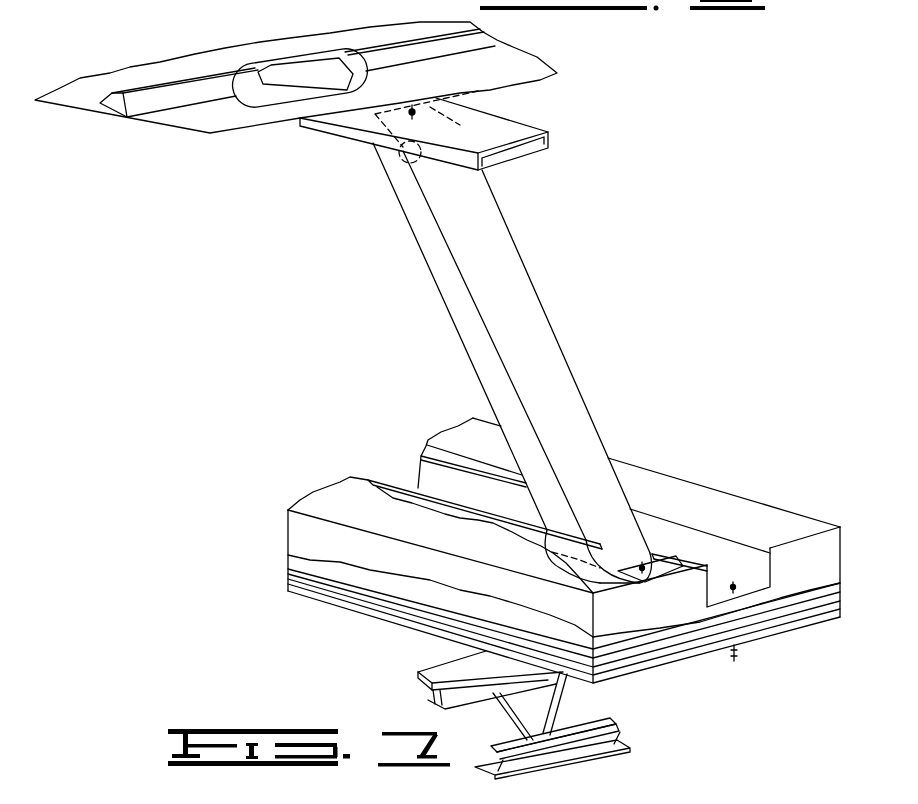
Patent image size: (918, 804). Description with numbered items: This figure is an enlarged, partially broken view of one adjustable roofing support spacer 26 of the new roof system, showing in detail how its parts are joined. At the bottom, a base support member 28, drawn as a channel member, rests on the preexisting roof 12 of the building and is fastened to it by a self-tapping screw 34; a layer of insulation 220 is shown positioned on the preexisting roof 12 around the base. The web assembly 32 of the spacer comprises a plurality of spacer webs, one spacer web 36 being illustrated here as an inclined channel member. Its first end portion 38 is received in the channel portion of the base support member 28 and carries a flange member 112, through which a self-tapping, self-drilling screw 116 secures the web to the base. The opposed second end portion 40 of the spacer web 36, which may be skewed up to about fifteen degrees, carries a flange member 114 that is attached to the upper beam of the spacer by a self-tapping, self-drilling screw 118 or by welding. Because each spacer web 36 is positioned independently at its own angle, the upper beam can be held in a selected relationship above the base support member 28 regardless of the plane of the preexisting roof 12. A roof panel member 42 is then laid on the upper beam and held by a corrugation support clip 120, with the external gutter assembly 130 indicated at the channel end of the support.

The preexisting roof 12 is at (315, 582).
The adjustable roofing support spacer 26 is at (569, 138).
The base support member 28 is at (693, 548).
The web assembly 32 is at (547, 300).
The self-tapping screw 34 is at (735, 590).
The spacer web 36 is at (457, 328).
The first end portion 38 is at (623, 543).
The opposed second end portion 40 is at (392, 164).
The roof panel member 42 is at (393, 40).
The flange member 112 is at (648, 568).
The flange member 114 is at (490, 96).
The self-tapping, self-drilling screw 116 is at (645, 574).
The self-tapping, self-drilling screw 118 is at (412, 108).
The corrugation support clip 120 is at (286, 67).
The external gutter assembly 130 is at (517, 132).
The insulation 220 is at (866, 495).